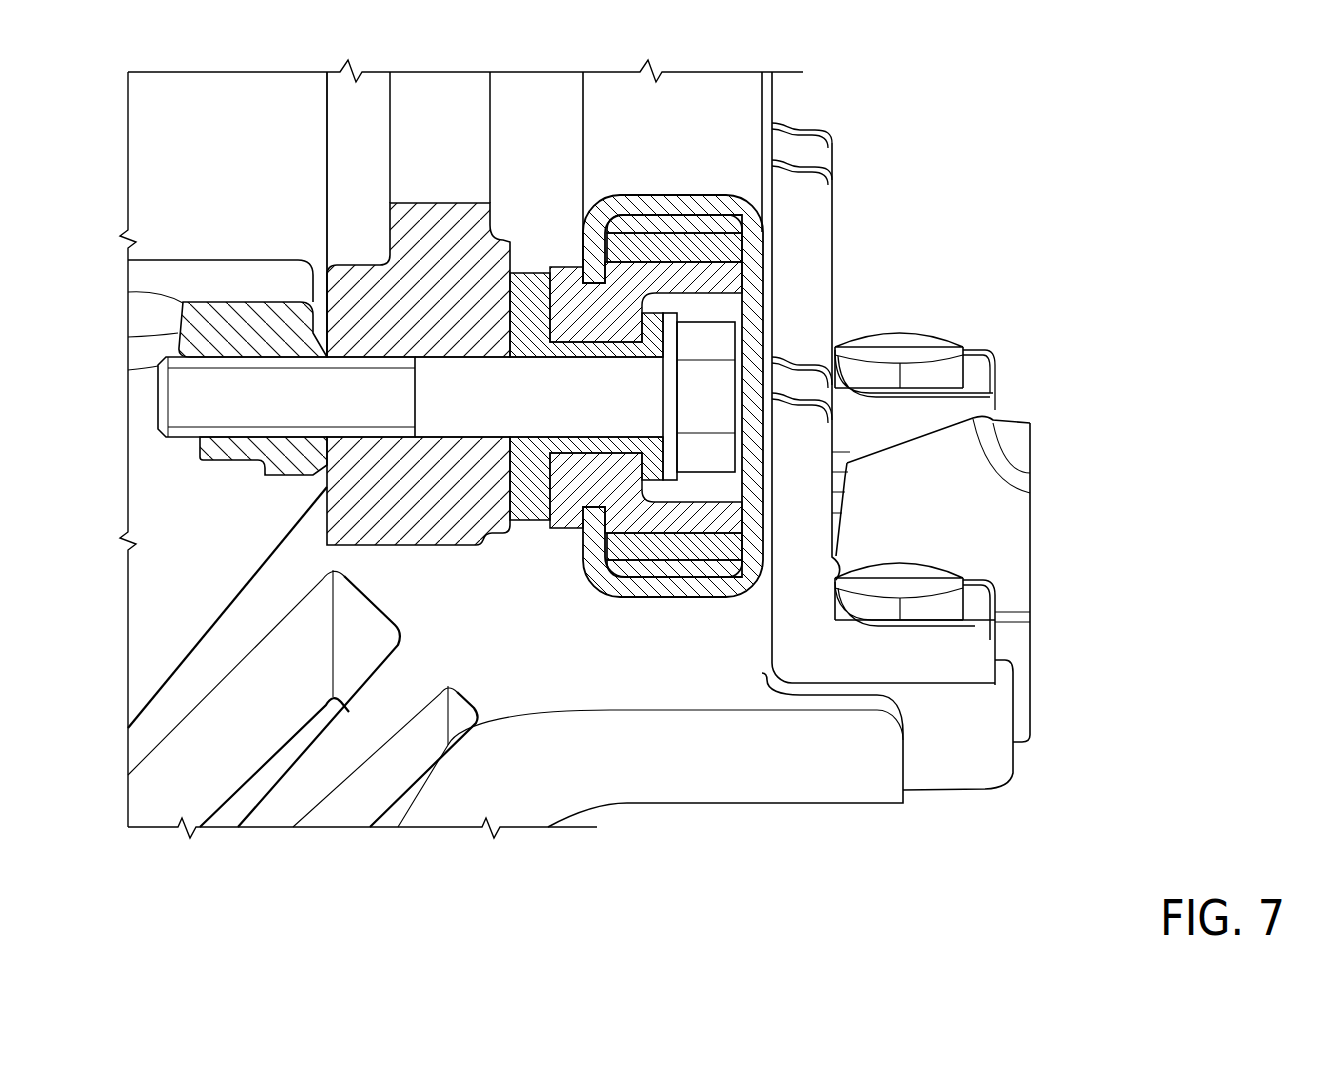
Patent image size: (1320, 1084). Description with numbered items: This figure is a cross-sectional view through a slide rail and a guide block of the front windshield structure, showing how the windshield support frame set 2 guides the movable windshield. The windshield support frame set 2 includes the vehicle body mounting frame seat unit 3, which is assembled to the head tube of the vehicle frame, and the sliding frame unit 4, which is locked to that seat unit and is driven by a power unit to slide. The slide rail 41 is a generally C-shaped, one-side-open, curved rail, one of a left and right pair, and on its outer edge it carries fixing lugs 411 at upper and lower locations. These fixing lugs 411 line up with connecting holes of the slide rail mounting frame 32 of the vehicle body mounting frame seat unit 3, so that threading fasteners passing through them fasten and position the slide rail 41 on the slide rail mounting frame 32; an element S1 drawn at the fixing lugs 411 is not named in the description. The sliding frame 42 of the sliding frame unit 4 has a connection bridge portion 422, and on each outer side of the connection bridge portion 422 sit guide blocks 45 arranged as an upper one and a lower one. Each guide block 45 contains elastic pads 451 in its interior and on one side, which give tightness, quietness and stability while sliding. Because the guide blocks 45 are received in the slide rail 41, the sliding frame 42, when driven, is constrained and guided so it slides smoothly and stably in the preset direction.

The windshield support frame set 2 is at (1048, 375).
The vehicle body mounting frame seat unit 3 is at (235, 618).
The slide rail mounting frame 32 is at (790, 780).
The sliding frame unit 4 is at (316, 183).
The slide rail 41 is at (600, 132).
The fixing lug 411 is at (820, 223).
The sliding frame 42 is at (338, 121).
The connection bridge portion 422 is at (197, 273).
The guide block 45 is at (707, 273).
The elastic pad 451 is at (530, 292).
The fastening bolt S1 is at (925, 347).